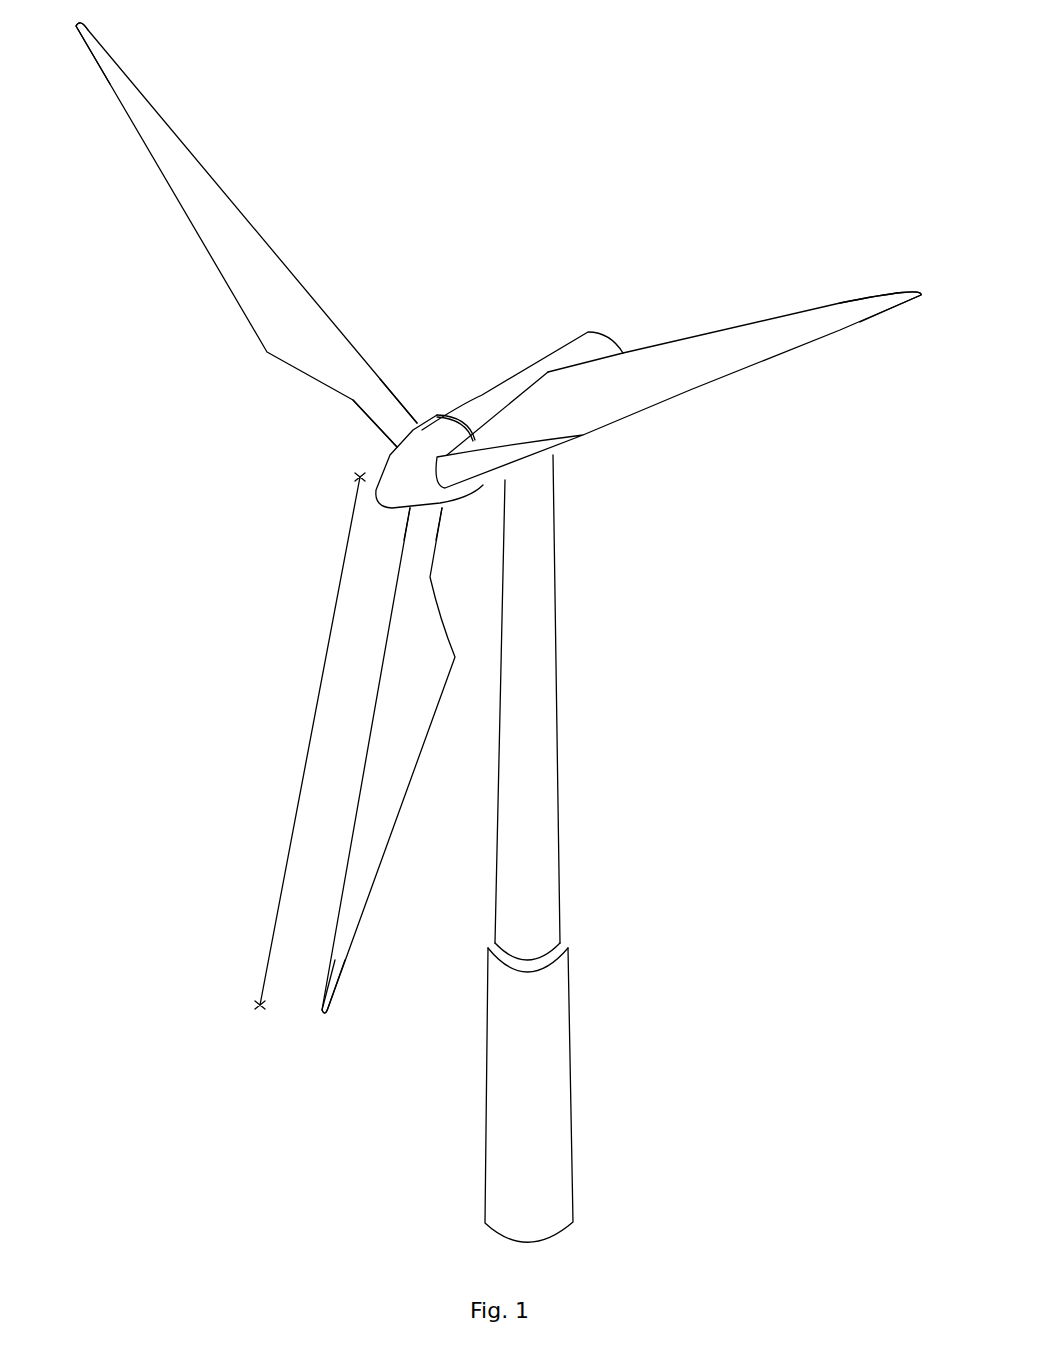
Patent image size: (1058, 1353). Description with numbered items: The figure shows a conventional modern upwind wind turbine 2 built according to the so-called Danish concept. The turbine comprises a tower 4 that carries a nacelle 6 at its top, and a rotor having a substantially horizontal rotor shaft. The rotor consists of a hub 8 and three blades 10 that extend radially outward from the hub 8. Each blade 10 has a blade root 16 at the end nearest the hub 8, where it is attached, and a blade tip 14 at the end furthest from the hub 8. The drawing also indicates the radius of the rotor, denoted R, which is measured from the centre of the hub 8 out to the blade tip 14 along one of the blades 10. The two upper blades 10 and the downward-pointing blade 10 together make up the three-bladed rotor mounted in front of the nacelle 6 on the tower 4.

The wind turbine 2 is at (660, 784).
The tower 4 is at (547, 703).
The nacelle 6 is at (493, 397).
The hub 8 is at (385, 474).
The blade 10 is at (281, 331).
The blade tip 14 is at (125, 83).
The blade root 16 is at (406, 436).